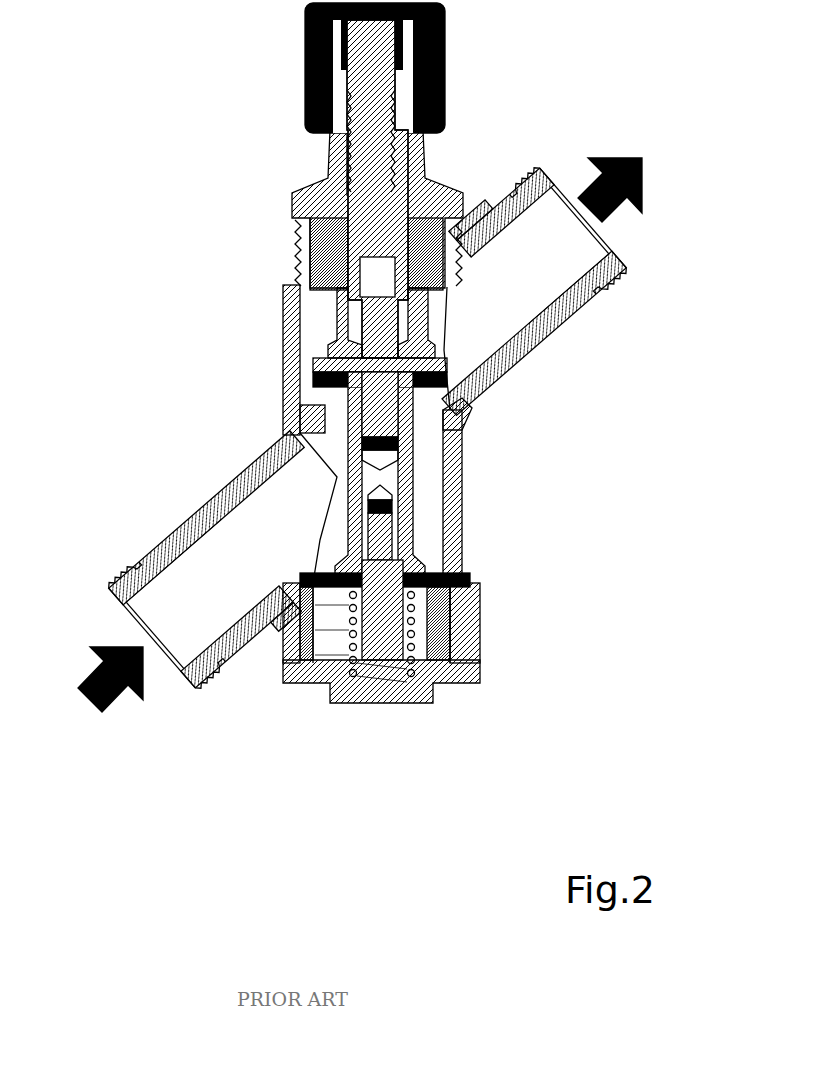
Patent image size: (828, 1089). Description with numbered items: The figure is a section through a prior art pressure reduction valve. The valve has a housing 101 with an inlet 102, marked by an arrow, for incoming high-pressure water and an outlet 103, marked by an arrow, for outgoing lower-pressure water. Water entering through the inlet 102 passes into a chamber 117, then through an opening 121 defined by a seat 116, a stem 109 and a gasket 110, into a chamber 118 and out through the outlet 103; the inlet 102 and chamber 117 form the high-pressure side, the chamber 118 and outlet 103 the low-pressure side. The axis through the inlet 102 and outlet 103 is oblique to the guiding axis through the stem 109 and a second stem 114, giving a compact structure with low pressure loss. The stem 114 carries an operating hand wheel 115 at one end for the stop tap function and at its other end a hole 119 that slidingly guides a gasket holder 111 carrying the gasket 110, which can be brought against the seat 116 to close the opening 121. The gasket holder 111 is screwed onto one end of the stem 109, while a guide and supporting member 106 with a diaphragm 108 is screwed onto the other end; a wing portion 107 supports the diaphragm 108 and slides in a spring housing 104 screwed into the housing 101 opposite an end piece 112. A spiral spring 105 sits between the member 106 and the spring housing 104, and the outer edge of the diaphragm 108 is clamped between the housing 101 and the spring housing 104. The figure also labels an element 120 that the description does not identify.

The housing 101 is at (448, 474).
The inlet 102 is at (98, 687).
The outlet 103 is at (632, 182).
The spring housing 104 is at (450, 735).
The spiral spring 105 is at (489, 619).
The guide and supporting member 106 is at (466, 649).
The wing portion 107 is at (458, 623).
The diaphragm 108 is at (457, 589).
The stem 109 is at (488, 438).
The gasket 110 is at (286, 372).
The gasket holder 111 is at (286, 341).
The end piece 112 is at (293, 209).
The stem 114 is at (266, 189).
The operating hand wheel 115 is at (284, 68).
The seat 116 is at (225, 416).
The chamber 117 is at (245, 562).
The chamber 118 is at (280, 311).
The hole 119 is at (284, 269).
The guide tube 120 is at (474, 473).
The opening 121 is at (495, 288).